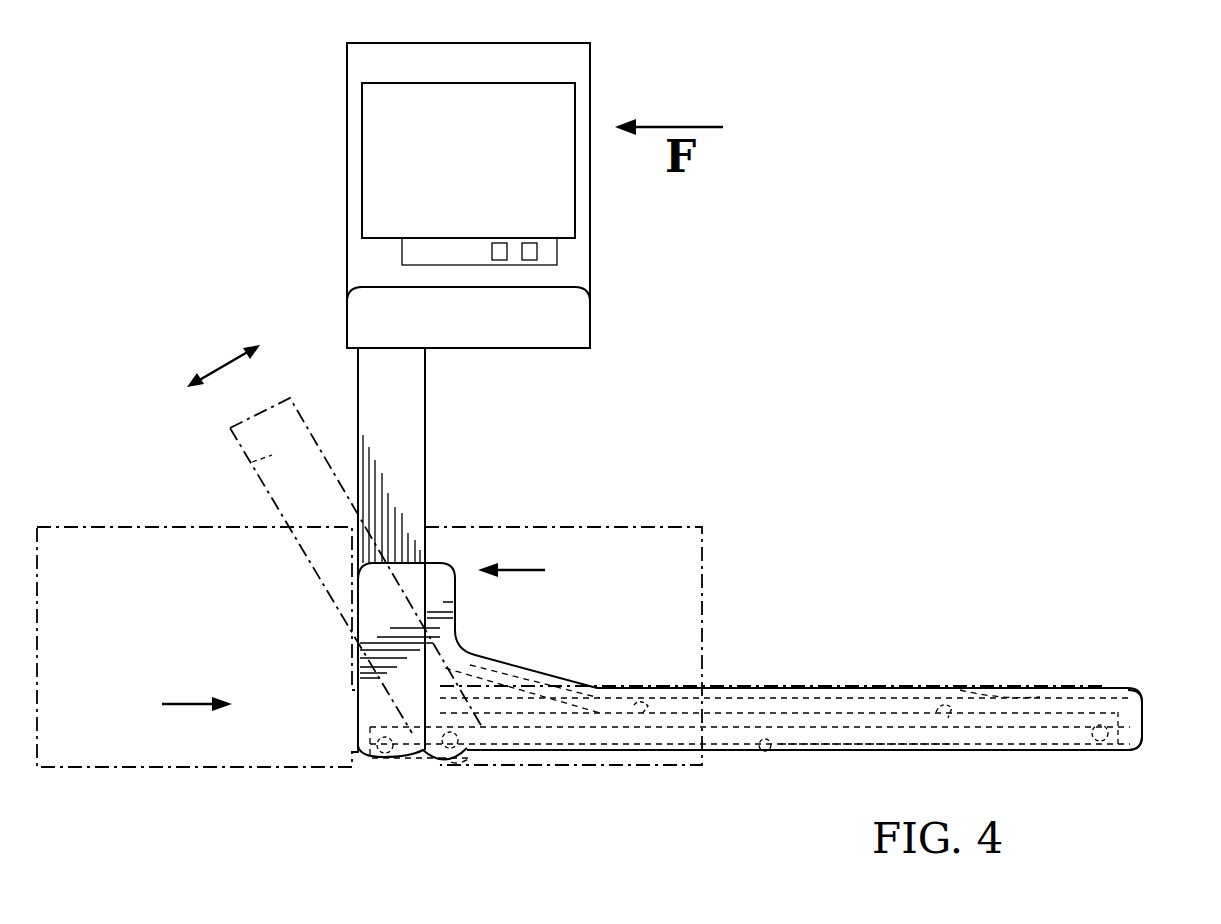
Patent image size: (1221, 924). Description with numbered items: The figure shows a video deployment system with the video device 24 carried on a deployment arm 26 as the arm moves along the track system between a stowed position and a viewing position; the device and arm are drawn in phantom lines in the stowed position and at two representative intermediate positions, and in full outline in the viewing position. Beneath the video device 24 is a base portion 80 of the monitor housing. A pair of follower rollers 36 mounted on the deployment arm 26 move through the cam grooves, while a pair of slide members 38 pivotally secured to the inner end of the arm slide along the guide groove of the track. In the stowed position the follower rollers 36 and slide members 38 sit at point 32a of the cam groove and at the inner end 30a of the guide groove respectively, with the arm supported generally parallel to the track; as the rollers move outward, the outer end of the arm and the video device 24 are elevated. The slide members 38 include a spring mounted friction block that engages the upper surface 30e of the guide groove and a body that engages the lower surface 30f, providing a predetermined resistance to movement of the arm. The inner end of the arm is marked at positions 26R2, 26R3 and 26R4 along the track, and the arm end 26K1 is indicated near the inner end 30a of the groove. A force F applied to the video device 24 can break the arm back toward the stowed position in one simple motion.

The video device 24 is at (598, 88).
The base portion 80 is at (558, 322).
The deployment arm 26 is at (392, 388).
The follower rollers 36 is at (365, 618).
The slide members 38 is at (375, 757).
The guide rail line 26R2 is at (840, 675).
The engaging end 26K1 is at (1110, 675).
The point 32a is at (960, 690).
The lower surface 30f is at (1012, 722).
The upper surface 30e is at (850, 727).
The inner end 30a is at (1130, 750).
The arm rotation point 26R3 is at (460, 762).
The arm rotation point 26R4 is at (410, 765).